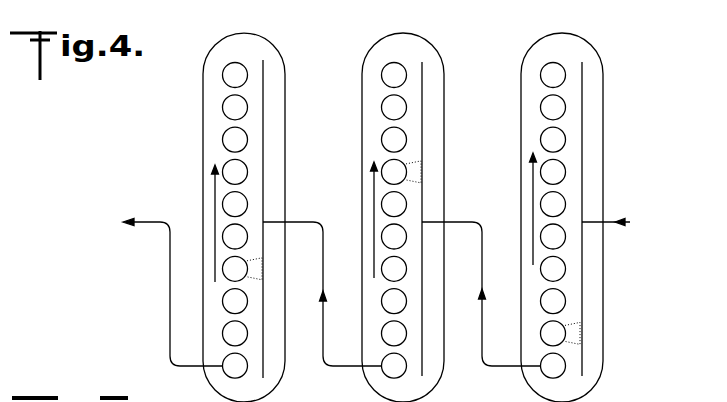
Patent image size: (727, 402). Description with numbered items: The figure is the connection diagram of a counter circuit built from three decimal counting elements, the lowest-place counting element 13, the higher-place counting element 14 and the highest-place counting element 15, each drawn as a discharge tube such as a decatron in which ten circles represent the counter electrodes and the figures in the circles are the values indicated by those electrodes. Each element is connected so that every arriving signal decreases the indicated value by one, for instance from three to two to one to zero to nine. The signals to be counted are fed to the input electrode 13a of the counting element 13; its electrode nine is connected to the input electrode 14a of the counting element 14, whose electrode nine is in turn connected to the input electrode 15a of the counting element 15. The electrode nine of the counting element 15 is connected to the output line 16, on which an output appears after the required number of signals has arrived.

The lowest-place counting element 13 is at (601, 62).
The input electrode of counting element 13 13a is at (583, 116).
The higher-place counting element 14 is at (442, 65).
The input electrode of counting element 14 14a is at (423, 131).
The highest-place counting element 15 is at (283, 65).
The input electrode of counting element 15 15a is at (264, 137).
The output line 16 is at (158, 222).